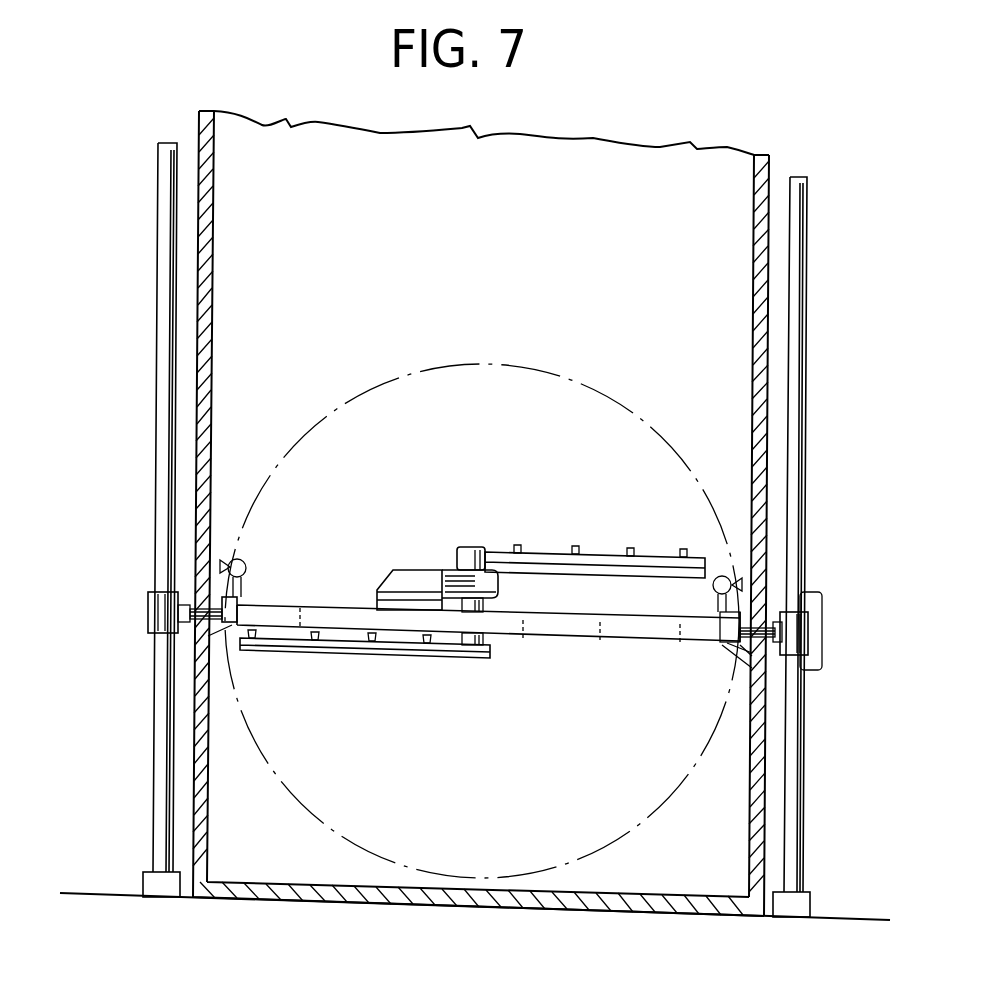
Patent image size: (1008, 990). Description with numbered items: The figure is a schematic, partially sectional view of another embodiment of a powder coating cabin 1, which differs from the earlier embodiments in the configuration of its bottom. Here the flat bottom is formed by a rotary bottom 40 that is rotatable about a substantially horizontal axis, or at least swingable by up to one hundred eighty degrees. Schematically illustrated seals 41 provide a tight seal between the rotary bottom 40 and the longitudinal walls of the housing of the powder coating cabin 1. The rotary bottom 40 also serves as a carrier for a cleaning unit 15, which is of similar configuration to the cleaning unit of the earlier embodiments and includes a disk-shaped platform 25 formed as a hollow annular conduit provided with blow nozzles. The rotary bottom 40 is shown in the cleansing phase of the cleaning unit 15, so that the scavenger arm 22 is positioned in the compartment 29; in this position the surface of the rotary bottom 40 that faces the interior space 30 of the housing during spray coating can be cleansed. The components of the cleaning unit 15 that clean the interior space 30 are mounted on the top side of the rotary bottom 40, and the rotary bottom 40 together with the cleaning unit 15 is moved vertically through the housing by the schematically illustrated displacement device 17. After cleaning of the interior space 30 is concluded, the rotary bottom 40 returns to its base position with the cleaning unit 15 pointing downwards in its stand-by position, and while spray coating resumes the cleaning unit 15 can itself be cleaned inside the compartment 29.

The powder coating cabin 1 is at (773, 154).
The interior space 30 is at (488, 291).
The cleaning unit 15 is at (432, 567).
The displacement device 17 is at (158, 612).
The platform 25 is at (727, 603).
The seals 41 is at (731, 652).
The scavenger arm 22 is at (327, 650).
The compartment 29 is at (472, 805).
The rotary bottom 40 is at (592, 632).